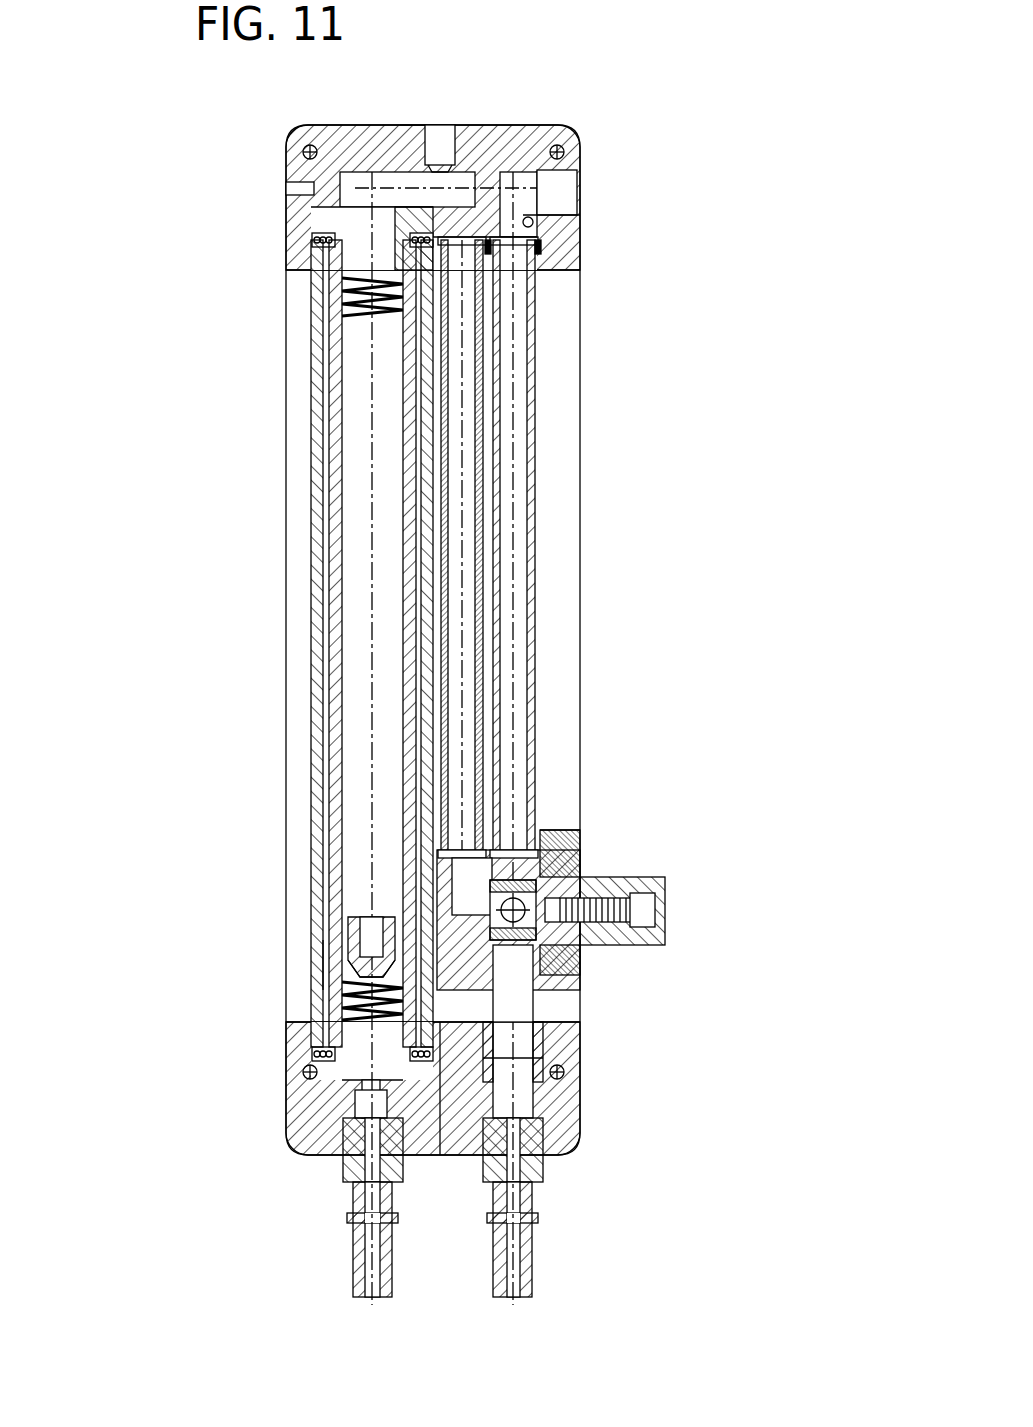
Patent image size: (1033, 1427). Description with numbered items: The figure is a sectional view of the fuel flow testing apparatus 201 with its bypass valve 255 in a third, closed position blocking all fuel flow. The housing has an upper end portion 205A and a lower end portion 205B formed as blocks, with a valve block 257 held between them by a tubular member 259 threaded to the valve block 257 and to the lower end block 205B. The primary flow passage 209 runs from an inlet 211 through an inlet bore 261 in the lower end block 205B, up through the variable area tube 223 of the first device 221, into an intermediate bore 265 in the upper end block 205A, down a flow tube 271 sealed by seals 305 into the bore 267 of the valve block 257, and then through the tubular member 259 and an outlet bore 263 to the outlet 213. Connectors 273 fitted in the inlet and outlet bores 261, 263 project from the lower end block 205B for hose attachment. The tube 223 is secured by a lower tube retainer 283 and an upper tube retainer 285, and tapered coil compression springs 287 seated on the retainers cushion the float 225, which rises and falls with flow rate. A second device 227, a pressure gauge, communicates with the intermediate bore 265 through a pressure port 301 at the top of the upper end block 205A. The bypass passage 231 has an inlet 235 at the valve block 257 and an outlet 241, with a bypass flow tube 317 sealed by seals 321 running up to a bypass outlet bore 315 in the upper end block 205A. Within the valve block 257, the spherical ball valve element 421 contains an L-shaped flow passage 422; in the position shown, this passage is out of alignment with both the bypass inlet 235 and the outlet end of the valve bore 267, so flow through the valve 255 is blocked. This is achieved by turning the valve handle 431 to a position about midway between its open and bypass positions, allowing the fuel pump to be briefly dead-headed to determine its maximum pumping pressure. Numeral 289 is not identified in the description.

The apparatus 201 is at (684, 143).
The upper end portion 205A is at (540, 130).
The lower end portion 205B is at (350, 1140).
The primary flow passage 209 is at (368, 600).
The inlet 211 is at (345, 1167).
The outlet 213 is at (540, 1150).
The first device 221 is at (324, 963).
The tube 223 is at (340, 832).
The float 225 is at (350, 912).
The second device 227 is at (413, 120).
The bypass passage 231 is at (530, 540).
The inlet 235 is at (512, 830).
The outlet 241 is at (560, 198).
The bypass valve 255 is at (598, 855).
The valve block 257 is at (576, 968).
The tubular member 259 is at (530, 1052).
The inlet bore 261 is at (358, 1103).
The outlet bore 263 is at (457, 1110).
The intermediate bore 265 is at (325, 186).
The bore 267 is at (568, 746).
The flow tube 271 is at (490, 332).
The connectors 273 is at (355, 1245).
The lower tube retainer 283 is at (320, 1046).
The upper tube retainer 285 is at (345, 272).
The tapered coil compression springs 287 is at (370, 318).
The outer cylinder 289 is at (325, 752).
The pressure port 301 is at (448, 128).
The seals 305 is at (490, 283).
The bypass outlet bore 315 is at (556, 222).
The bypass flow tube 317 is at (530, 372).
The seals 321 is at (530, 246).
The ball valve element 421 is at (575, 950).
The L-shaped flow passage 422 is at (360, 942).
The valve handle 431 is at (660, 890).